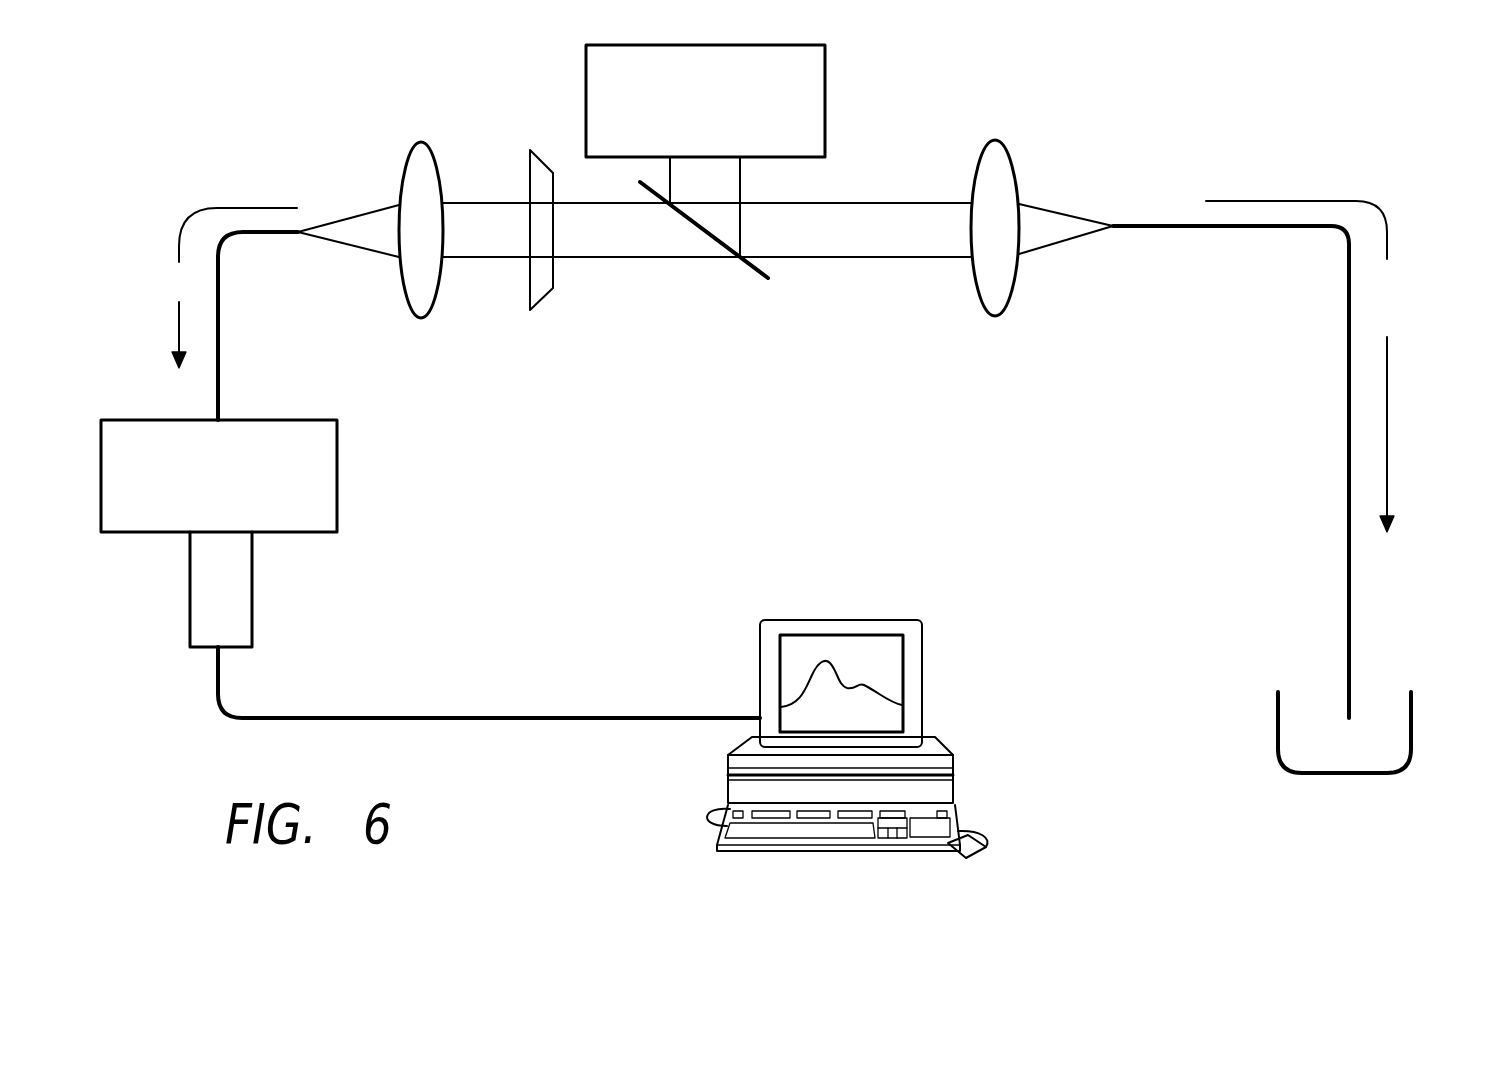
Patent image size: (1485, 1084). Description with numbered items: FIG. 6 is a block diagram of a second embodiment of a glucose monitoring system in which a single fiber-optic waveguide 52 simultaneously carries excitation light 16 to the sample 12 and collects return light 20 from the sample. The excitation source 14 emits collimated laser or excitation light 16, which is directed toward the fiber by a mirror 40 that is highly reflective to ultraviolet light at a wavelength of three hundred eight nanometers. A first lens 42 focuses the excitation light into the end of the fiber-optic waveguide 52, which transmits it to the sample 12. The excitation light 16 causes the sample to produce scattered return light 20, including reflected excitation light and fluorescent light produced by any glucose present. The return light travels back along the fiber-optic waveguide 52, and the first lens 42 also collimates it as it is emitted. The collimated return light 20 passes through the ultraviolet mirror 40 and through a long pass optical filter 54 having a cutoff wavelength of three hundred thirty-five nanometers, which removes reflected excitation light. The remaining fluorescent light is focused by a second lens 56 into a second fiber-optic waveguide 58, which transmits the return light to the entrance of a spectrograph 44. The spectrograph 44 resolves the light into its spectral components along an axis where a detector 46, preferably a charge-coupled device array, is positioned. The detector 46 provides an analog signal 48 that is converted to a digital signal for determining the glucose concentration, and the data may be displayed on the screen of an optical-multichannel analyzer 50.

The sample 12 is at (1278, 718).
The excitation source 14 is at (826, 80).
The excitation light 16 is at (742, 170).
The return light 20 is at (652, 242).
The mirror 40 is at (652, 184).
The first lens 42 is at (1012, 280).
The spectrograph 44 is at (338, 477).
The detector 46 is at (252, 632).
The analog signal 48 is at (462, 717).
The optical-multichannel analyzer 50 is at (800, 620).
The fiber-optic waveguide 52 is at (1260, 230).
The long pass optical filter 54 is at (553, 290).
The second lens 56 is at (442, 283).
The second fiber-optic waveguide 58 is at (220, 330).